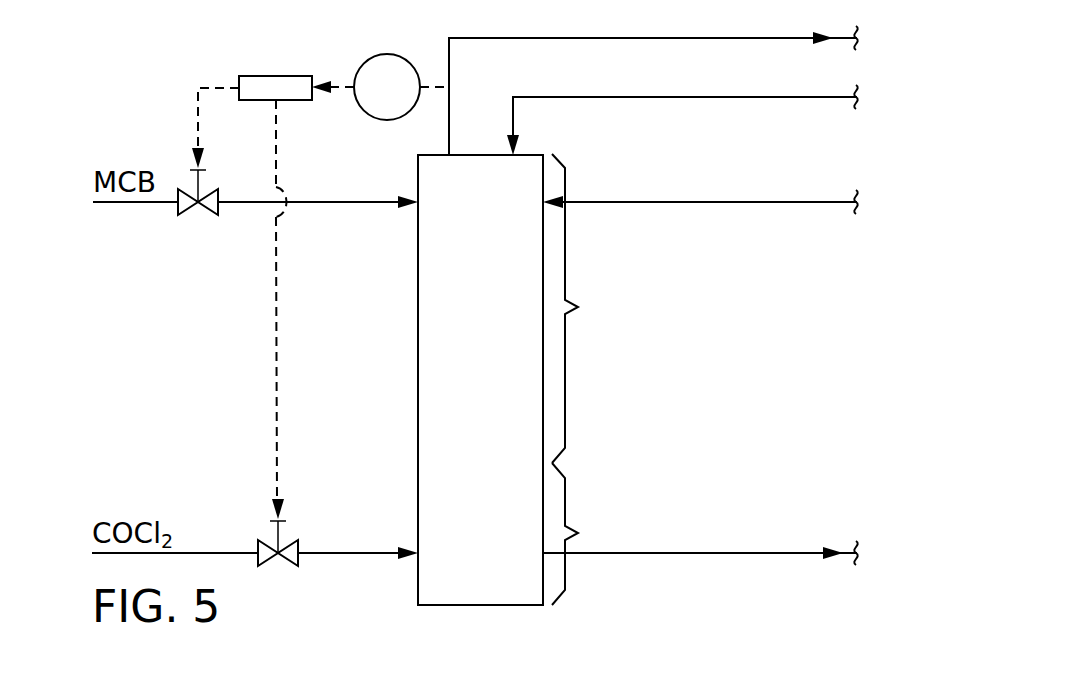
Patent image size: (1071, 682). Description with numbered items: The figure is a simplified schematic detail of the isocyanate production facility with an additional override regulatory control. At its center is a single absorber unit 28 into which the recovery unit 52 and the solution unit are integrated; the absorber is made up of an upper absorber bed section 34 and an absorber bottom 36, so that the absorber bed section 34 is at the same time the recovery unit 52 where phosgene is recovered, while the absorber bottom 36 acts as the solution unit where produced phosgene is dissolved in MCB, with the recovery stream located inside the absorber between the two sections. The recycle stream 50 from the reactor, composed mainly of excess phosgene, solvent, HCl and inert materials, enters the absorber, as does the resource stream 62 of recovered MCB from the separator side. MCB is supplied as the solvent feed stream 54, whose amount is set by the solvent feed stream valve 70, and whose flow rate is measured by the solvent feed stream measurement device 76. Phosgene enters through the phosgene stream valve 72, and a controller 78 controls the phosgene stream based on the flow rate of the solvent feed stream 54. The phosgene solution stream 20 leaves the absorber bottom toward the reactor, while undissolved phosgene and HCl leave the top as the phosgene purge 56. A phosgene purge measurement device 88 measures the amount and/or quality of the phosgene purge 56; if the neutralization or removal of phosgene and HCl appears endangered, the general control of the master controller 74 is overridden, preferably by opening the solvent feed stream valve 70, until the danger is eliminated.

The phosgene solution stream 20 is at (742, 553).
The absorber unit 28 is at (418, 397).
The absorber bed section 34 is at (609, 308).
The absorber bottom 36 is at (609, 534).
The recycle stream 50 is at (731, 202).
The recovery unit 52 is at (609, 308).
The solvent feed stream 54 is at (341, 203).
The phosgene purge 56 is at (712, 38).
The resource stream 62 is at (733, 97).
The solvent feed stream valve 70 is at (178, 215).
The phosgene stream valve 72 is at (259, 553).
The controller 74 is at (262, 77).
The solvent feed stream measurement device 76 is at (344, 553).
The controller 78 is at (609, 534).
The phosgene purge measurement device 88 is at (391, 55).